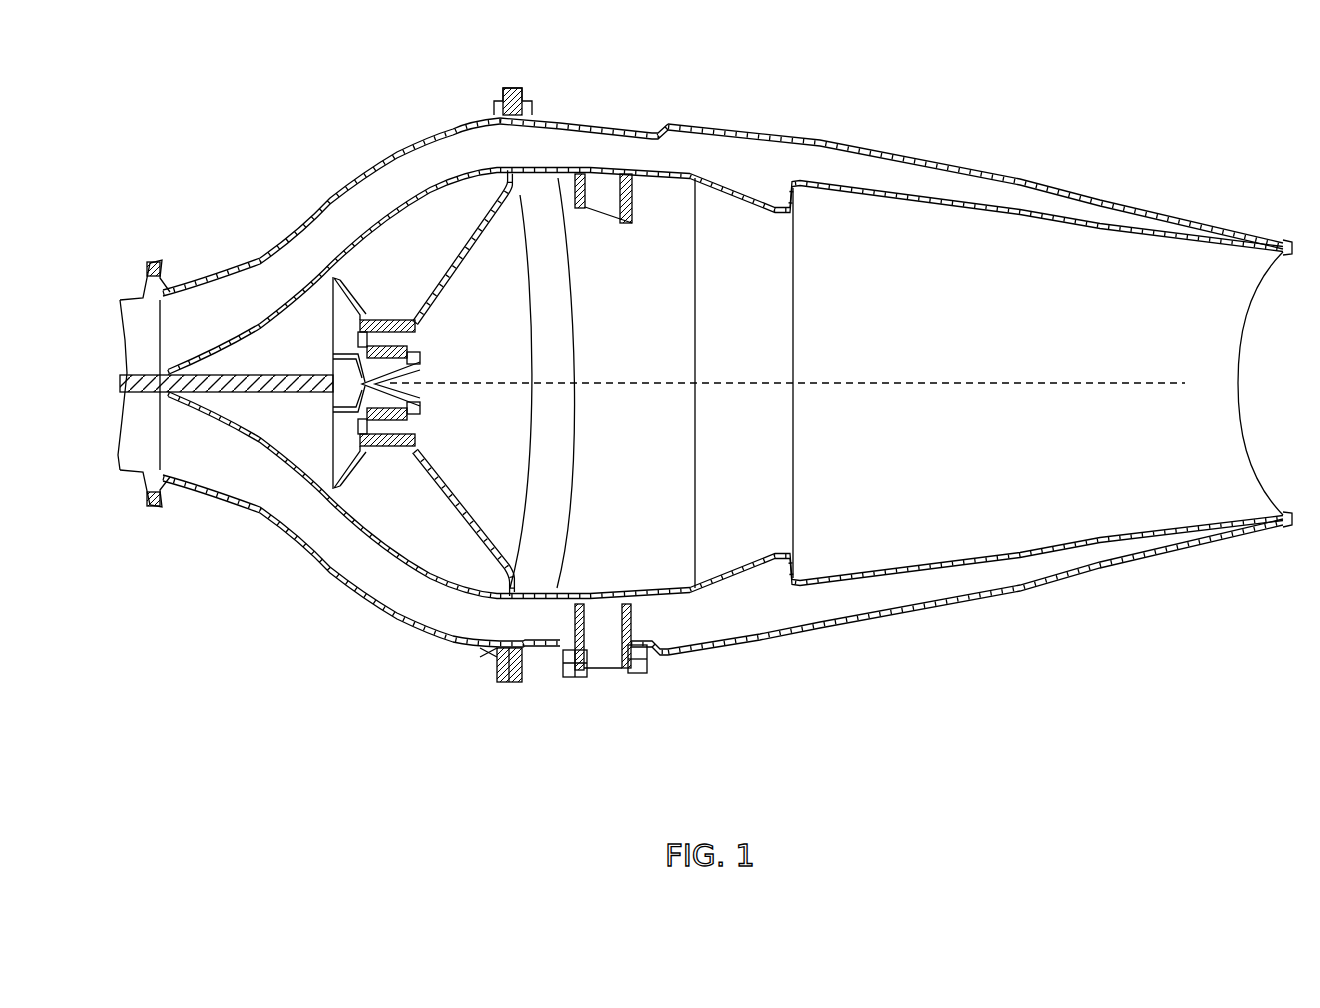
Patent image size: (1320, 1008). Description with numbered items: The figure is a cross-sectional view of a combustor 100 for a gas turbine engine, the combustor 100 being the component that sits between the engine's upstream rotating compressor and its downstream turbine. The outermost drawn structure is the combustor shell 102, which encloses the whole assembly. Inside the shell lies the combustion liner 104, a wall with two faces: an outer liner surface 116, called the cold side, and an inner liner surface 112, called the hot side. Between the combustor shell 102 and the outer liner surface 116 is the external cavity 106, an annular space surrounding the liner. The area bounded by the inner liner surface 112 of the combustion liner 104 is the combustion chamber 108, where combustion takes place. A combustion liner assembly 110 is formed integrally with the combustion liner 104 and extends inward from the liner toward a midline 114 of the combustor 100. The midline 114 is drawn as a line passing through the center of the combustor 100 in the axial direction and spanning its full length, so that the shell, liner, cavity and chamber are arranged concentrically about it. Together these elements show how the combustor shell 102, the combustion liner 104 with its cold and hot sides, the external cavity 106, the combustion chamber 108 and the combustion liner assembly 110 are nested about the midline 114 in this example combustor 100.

The combustor 100 is at (1008, 132).
The combustor shell 102 is at (847, 147).
The combustion liner 104 is at (752, 187).
The external cavity 106 is at (675, 140).
The combustion chamber 108 is at (480, 445).
The combustion liner assembly 110 is at (572, 252).
The inner liner surface 112 is at (662, 173).
The midline 114 is at (743, 385).
The outer liner surface 116 is at (547, 168).